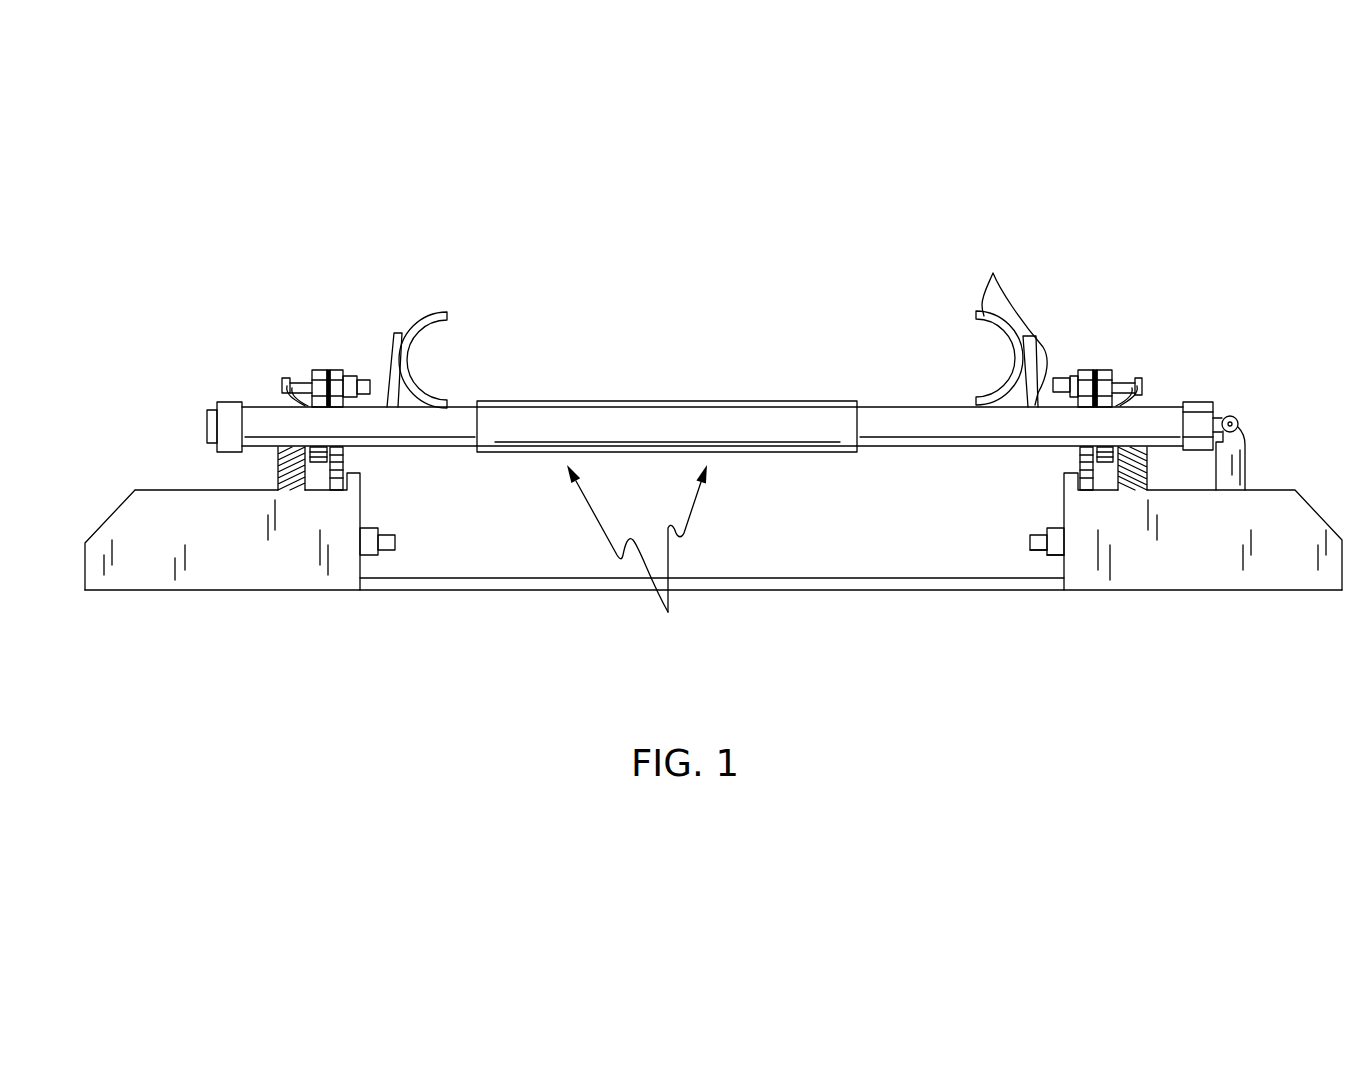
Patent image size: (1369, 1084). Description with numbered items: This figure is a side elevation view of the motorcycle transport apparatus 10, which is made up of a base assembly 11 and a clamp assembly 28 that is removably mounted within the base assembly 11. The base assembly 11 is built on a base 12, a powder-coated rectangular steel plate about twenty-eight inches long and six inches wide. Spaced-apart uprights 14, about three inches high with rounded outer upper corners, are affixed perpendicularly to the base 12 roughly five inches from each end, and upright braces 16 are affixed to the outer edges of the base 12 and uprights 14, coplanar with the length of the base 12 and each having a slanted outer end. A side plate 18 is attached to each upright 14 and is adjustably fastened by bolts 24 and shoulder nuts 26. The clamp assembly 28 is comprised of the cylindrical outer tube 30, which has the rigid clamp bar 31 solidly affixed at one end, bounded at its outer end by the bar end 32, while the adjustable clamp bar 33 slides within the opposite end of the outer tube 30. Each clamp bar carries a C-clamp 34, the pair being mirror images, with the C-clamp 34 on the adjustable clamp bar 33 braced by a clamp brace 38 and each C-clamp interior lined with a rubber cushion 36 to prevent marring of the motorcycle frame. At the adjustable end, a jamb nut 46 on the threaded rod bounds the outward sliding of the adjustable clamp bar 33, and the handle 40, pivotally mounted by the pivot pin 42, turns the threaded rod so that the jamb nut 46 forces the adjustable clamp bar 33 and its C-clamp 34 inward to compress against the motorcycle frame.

The apparatus 10 is at (741, 452).
The base assembly 11 is at (703, 567).
The base 12 is at (855, 578).
The uprights 14 is at (362, 505).
The upright braces 16 is at (112, 512).
The side plate 18 is at (330, 475).
The bolts 24 is at (397, 545).
The shoulder nuts 26 is at (1060, 550).
The clamp assembly 28 is at (637, 566).
The outer tube 30 is at (717, 452).
The rigid clamp bar 31 is at (259, 413).
The bar end 32 is at (222, 408).
The adjustable clamp bar 33 is at (910, 407).
The C-clamp 34 is at (1006, 321).
The cushion 36 is at (415, 360).
The clamp brace 38 is at (387, 372).
The handle 40 is at (1245, 462).
The pivot pin 42 is at (1233, 424).
The jamb nut 46 is at (1197, 402).